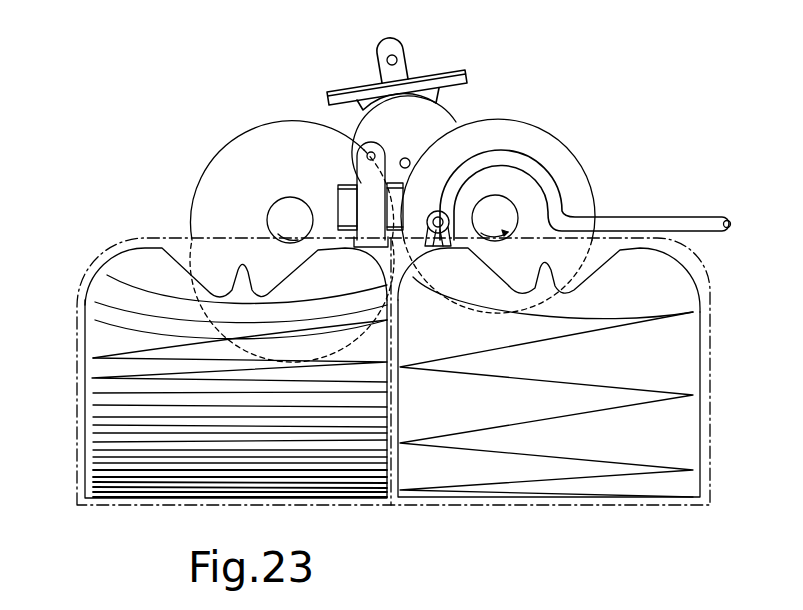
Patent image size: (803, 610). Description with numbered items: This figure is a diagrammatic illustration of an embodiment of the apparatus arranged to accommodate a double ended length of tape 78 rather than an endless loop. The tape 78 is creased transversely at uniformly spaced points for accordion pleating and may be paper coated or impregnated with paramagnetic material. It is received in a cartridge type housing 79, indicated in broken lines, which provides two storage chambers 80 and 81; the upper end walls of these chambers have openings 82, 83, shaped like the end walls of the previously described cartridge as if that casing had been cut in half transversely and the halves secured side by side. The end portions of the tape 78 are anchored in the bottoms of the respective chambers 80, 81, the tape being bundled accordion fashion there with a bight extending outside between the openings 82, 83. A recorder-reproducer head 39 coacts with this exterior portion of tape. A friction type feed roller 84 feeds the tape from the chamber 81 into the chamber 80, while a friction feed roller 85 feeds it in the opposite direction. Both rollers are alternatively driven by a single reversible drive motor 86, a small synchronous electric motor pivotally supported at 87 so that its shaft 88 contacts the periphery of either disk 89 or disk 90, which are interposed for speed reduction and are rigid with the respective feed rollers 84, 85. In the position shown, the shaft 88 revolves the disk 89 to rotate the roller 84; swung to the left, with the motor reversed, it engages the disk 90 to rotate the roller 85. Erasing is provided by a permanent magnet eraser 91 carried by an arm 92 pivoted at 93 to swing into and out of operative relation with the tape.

The recorder-reproducer head 39 is at (344, 185).
The tape 78 is at (596, 383).
The cartridge type housing 79 is at (703, 283).
The storage chamber 80 is at (688, 363).
The storage chamber 81 is at (93, 342).
The opening 82 is at (554, 290).
The opening 83 is at (243, 285).
The friction type feed roller 84 is at (496, 200).
The friction feed roller 85 is at (269, 215).
The reversible drive motor 86 is at (437, 121).
The pivot 87 is at (394, 60).
The motor shaft 88 is at (405, 158).
The disk 89 is at (559, 152).
The disk 90 is at (258, 140).
The permanent magnet eraser 91 is at (428, 217).
The arm 92 is at (642, 217).
The pivot 93 is at (731, 221).